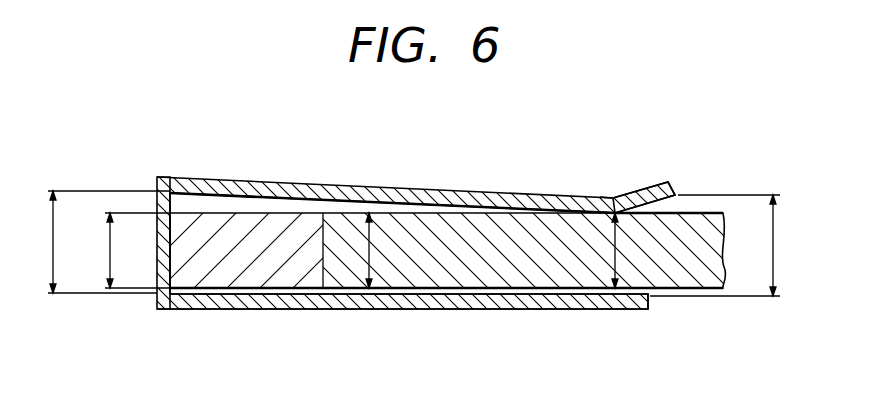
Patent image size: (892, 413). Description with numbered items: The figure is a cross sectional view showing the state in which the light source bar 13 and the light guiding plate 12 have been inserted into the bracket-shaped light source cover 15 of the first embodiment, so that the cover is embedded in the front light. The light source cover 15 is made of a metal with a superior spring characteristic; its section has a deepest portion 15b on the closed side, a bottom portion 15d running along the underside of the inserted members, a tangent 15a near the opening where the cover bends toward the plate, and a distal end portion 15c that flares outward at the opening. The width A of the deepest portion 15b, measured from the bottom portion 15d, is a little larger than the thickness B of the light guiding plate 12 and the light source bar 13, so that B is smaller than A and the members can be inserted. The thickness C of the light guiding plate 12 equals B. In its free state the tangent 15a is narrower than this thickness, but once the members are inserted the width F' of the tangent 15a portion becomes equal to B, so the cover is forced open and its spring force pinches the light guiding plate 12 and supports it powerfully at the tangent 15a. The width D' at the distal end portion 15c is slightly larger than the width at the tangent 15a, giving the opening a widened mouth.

The light guiding plate 12 is at (542, 278).
The light source bar 13 is at (197, 293).
The light source cover 15 is at (283, 187).
The tangent 15a is at (615, 198).
The deepest portion 15b is at (172, 177).
The distal end portion 15c is at (675, 190).
The bottom portion 15d is at (313, 302).
The width of the deepest portion A is at (100, 242).
The thickness of the light guiding plate and light source bar B is at (127, 250).
The thickness of the light guiding plate C is at (372, 245).
The width of the tangent portion after insertion F' is at (592, 218).
The width of the distal end portion after insertion D' is at (723, 245).